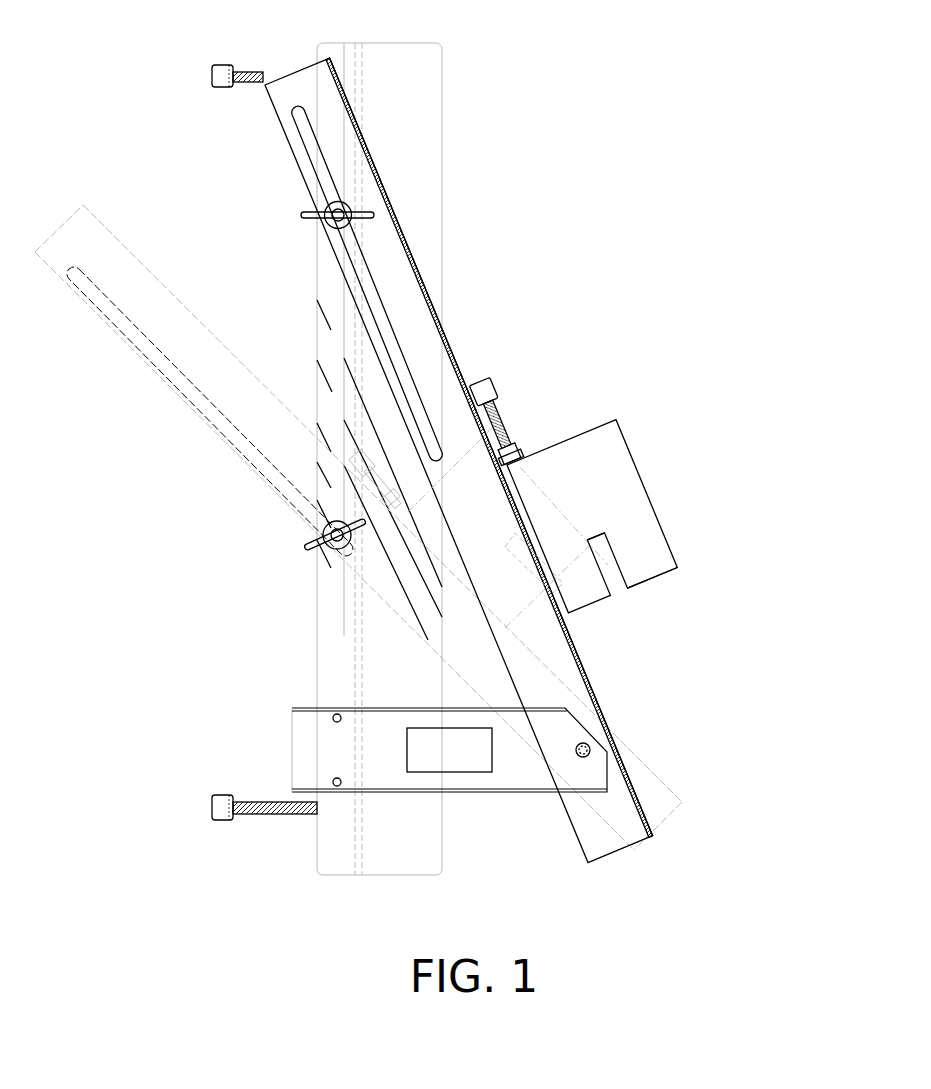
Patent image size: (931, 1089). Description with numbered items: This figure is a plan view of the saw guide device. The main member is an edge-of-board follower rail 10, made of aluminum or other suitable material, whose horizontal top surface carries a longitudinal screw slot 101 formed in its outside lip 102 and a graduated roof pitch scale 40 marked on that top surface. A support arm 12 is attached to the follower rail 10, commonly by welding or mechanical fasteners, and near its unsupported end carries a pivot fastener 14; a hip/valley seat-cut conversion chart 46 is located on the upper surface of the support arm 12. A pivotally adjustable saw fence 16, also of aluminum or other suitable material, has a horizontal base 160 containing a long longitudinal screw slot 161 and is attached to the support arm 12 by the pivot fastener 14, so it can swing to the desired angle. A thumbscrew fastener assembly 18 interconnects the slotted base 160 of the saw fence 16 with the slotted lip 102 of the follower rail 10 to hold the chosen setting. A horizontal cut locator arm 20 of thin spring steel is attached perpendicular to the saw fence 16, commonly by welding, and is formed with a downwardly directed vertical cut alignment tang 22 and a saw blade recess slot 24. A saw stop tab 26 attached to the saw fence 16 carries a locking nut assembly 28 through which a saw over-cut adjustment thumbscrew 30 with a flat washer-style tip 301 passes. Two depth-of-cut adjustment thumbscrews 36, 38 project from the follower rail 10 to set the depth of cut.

The edge-of-board follower rail 10 is at (422, 115).
The support arm 12 is at (446, 772).
The pivot fastener 14 is at (582, 745).
The pivotally adjustable saw fence 16 is at (490, 460).
The horizontal base 160 is at (407, 290).
The long longitudinal screw slot 161 is at (405, 370).
The thumbscrew fastener assembly 18 is at (320, 212).
The horizontal cut locator arm 20 is at (653, 505).
The vertical cut alignment tang 22 is at (655, 578).
The saw blade recess slot 24 is at (612, 528).
The saw stop tab 26 is at (520, 452).
The locking nut assembly 28 is at (512, 435).
The saw over-cut adjustment thumbscrew 30 is at (498, 393).
The flat washer-style tip 301 is at (523, 449).
The depth-of-cut adjustment thumbscrew 36 is at (222, 68).
The depth-of-cut adjustment thumbscrew 38 is at (215, 800).
The graduated roof pitch scale 40 is at (318, 355).
The hip/valley seat-cut conversion chart 46 is at (490, 765).
The longitudinal screw slot 101 is at (325, 300).
The outside lip 102 is at (325, 338).